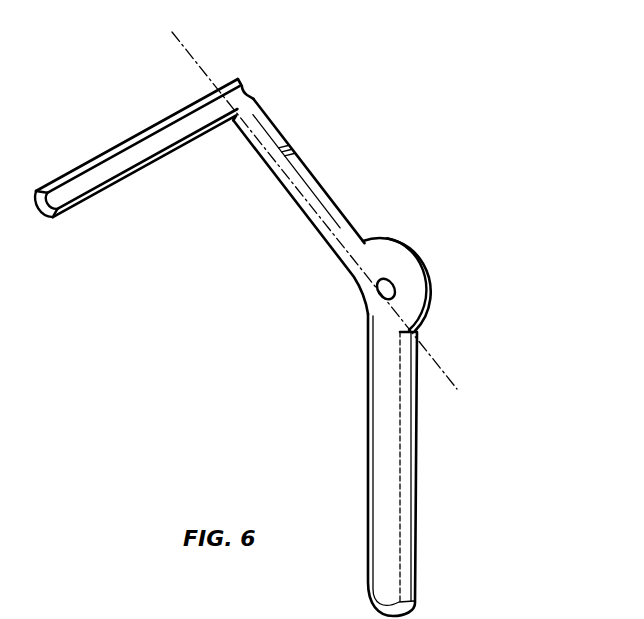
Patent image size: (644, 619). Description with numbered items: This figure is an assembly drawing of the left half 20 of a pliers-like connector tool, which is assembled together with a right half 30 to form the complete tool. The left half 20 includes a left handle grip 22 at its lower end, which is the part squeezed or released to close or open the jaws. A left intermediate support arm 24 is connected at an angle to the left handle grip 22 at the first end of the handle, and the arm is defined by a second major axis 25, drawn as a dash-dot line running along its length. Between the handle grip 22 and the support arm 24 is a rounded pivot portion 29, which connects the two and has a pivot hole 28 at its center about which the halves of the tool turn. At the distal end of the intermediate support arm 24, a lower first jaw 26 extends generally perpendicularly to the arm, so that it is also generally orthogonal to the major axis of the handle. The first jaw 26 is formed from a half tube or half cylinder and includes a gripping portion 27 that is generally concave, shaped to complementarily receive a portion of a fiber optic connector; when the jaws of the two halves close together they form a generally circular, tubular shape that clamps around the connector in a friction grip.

The left half 20 is at (323, 128).
The left handle grip 22 is at (417, 437).
The left intermediate support arm 24 is at (322, 189).
The second major axis 25 is at (186, 52).
The first jaw 26 is at (90, 163).
The gripping portion 27 is at (147, 147).
The pivot hole 28 is at (375, 289).
The pivot portion 29 is at (403, 250).
The right half 30 is at (8, 588).